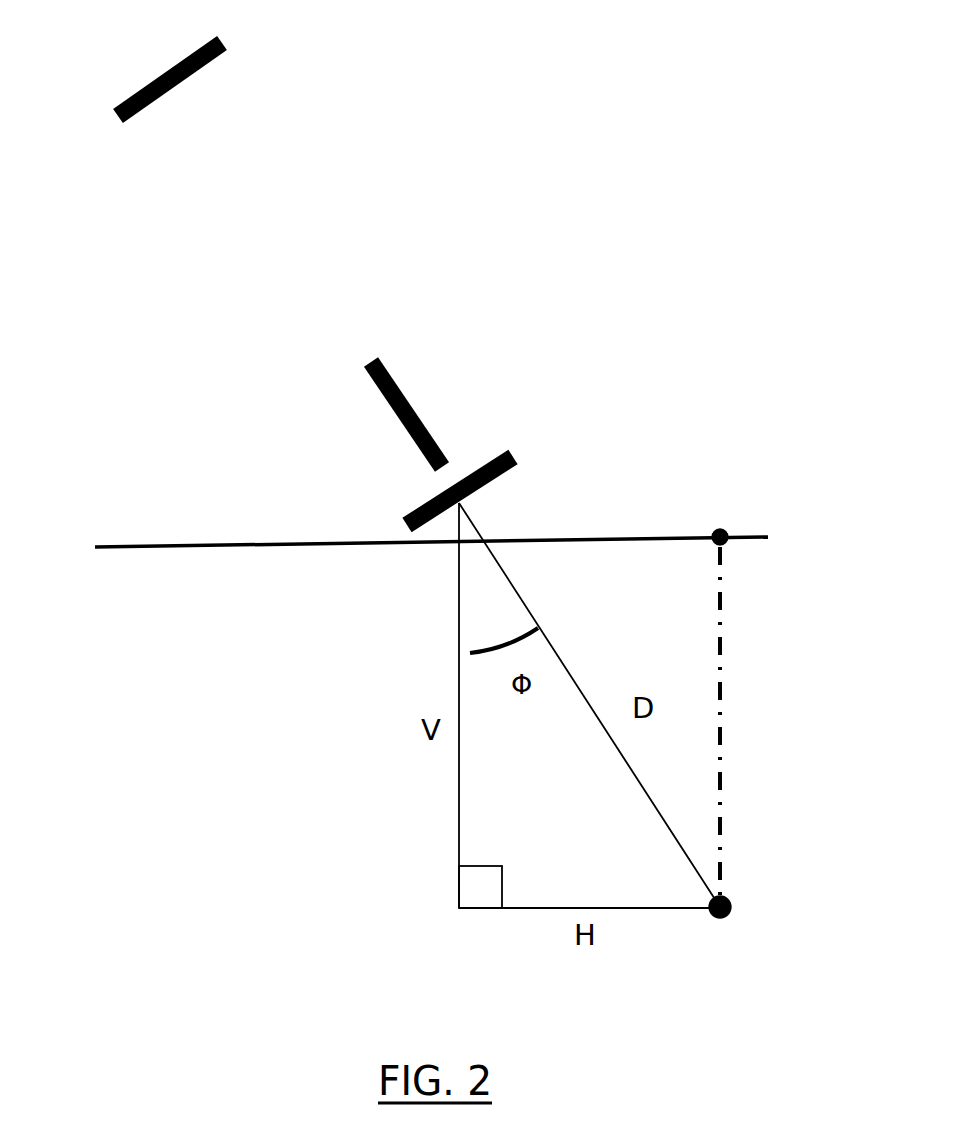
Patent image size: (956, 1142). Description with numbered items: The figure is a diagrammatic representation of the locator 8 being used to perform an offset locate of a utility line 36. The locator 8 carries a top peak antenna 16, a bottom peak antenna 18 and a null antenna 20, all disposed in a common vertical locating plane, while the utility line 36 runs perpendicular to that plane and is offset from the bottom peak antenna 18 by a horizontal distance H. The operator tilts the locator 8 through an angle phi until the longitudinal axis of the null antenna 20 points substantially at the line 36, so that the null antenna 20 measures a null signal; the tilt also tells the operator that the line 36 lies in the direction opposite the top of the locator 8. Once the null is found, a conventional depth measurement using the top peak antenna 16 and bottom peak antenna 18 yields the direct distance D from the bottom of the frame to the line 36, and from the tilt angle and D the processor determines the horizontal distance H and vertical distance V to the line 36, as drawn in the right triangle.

The locator 8 is at (447, 68).
The top peak antenna 16 is at (143, 88).
The bottom peak antenna 18 is at (507, 453).
The null antenna 20 is at (403, 388).
The utility line 36 is at (730, 897).